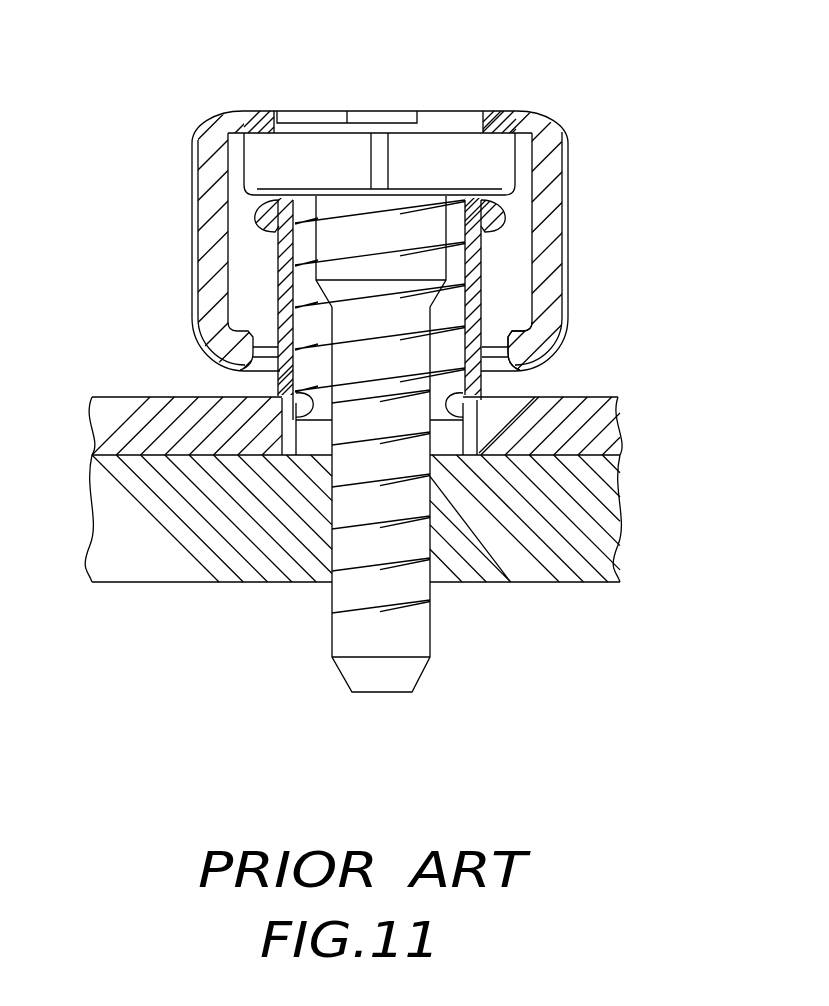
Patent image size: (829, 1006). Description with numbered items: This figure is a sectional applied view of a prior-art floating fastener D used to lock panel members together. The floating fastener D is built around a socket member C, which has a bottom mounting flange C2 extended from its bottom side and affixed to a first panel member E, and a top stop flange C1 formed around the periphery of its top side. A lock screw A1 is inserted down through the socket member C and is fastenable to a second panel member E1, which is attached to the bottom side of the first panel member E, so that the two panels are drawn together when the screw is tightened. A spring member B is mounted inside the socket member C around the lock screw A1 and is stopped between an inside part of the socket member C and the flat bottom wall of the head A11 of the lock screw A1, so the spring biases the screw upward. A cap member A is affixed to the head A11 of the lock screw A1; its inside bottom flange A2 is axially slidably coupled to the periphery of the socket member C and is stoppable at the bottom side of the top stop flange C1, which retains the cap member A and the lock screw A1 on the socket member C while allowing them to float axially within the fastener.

The floating fastener D is at (211, 78).
The cap member A is at (548, 228).
The head of the lock screw A11 is at (444, 152).
The lock screw A1 is at (306, 637).
The inside bottom flange A2 is at (516, 345).
The spring member B is at (455, 327).
The socket member C is at (279, 274).
The top stop flange C1 is at (255, 213).
The bottom mounting flange C2 is at (452, 418).
The first panel member E is at (103, 438).
The second panel member E1 is at (103, 487).